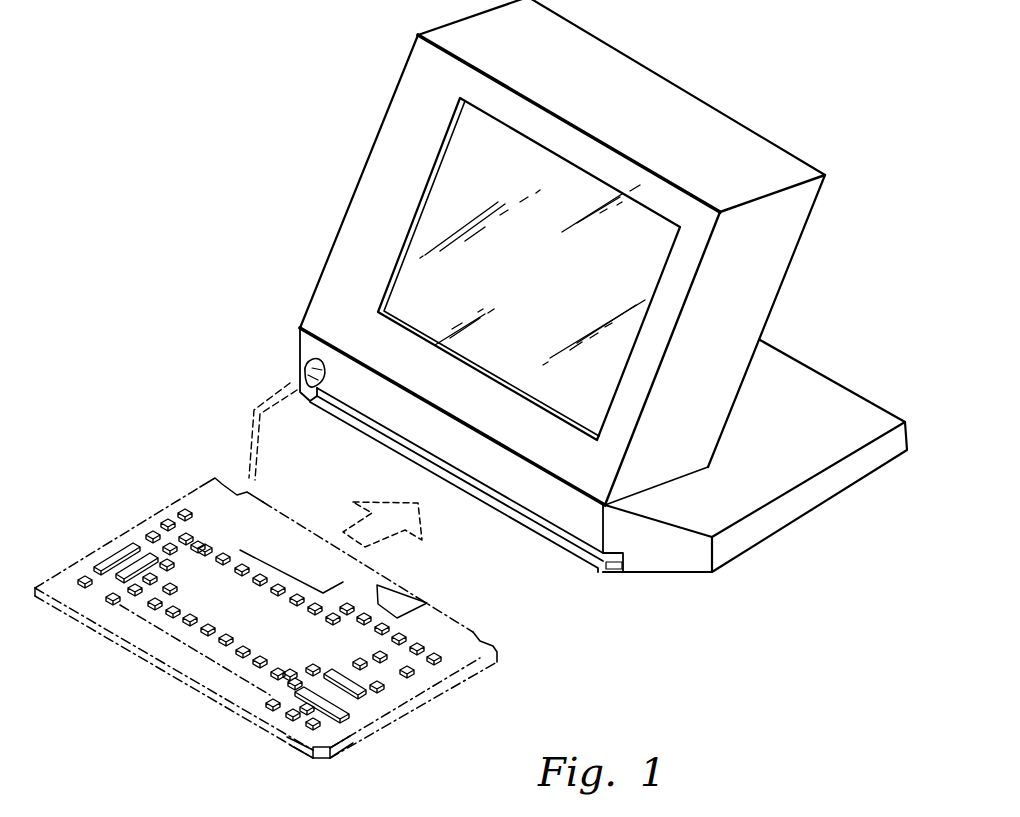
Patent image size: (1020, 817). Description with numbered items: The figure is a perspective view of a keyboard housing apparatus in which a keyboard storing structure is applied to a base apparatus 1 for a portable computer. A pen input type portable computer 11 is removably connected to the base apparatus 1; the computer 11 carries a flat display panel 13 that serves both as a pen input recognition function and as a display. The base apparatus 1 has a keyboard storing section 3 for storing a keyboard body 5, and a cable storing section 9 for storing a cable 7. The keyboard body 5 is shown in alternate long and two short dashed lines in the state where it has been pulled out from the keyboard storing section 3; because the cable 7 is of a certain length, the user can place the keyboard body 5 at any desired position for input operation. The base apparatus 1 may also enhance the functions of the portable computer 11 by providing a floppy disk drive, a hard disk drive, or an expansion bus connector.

The base apparatus 1 is at (780, 518).
The keyboard storing section 3 is at (486, 492).
The keyboard body 5 is at (560, 547).
The cable 7 is at (301, 372).
The cable storing section 9 is at (301, 362).
The pen input type portable computer 11 is at (685, 117).
The flat display panel 13 is at (623, 253).